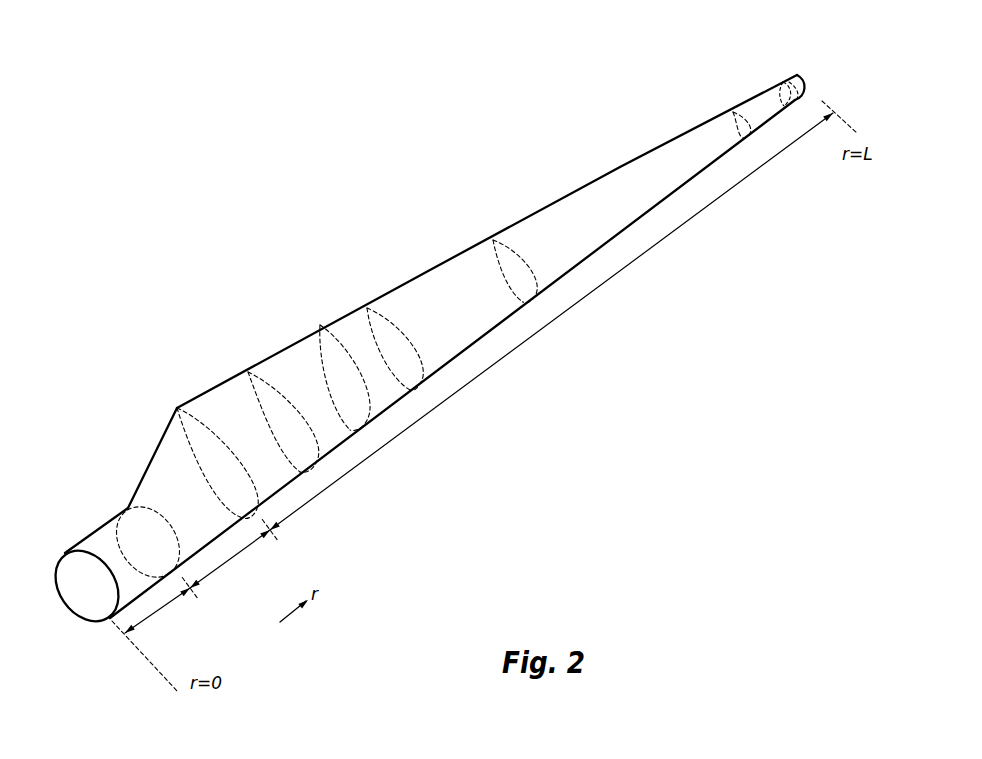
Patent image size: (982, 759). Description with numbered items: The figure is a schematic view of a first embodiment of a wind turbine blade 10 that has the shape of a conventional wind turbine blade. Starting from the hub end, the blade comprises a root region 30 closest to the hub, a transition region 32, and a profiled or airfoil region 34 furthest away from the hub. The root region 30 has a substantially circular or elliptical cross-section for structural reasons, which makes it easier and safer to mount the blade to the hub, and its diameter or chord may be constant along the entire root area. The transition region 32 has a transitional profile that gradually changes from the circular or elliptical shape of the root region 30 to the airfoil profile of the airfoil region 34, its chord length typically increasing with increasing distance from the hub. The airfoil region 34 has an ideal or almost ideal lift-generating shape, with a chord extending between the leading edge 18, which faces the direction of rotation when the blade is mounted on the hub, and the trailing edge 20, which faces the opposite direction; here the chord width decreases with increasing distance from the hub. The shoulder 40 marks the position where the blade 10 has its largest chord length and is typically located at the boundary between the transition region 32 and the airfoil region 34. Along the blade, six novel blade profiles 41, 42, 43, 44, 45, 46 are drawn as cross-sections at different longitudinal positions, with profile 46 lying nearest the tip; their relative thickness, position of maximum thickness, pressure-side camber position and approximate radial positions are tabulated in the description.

The wind turbine blade 10 is at (295, 244).
The leading edge 18 is at (578, 262).
The trailing edge 20 is at (580, 187).
The root region 30 is at (160, 610).
The transition region 32 is at (233, 560).
The airfoil region 34 is at (493, 357).
The shoulder 40 is at (177, 407).
The blade profile 41 is at (256, 378).
The blade profile 42 is at (321, 327).
The blade profile 43 is at (383, 320).
The blade profile 44 is at (497, 257).
The blade profile 45 is at (731, 125).
The blade profile 46 is at (779, 85).